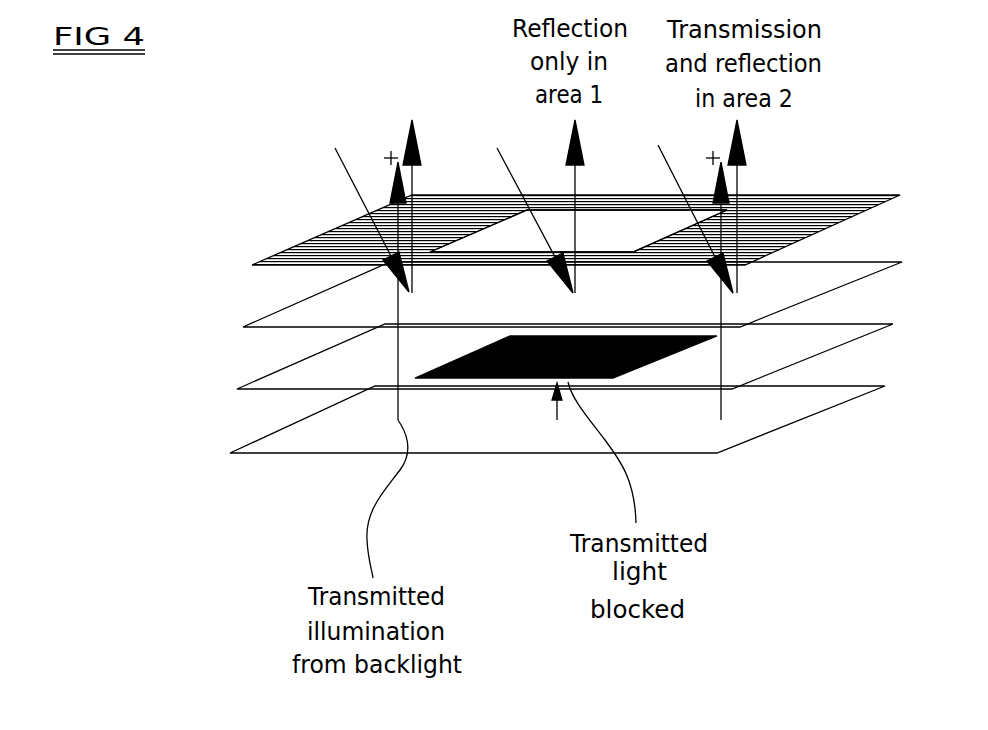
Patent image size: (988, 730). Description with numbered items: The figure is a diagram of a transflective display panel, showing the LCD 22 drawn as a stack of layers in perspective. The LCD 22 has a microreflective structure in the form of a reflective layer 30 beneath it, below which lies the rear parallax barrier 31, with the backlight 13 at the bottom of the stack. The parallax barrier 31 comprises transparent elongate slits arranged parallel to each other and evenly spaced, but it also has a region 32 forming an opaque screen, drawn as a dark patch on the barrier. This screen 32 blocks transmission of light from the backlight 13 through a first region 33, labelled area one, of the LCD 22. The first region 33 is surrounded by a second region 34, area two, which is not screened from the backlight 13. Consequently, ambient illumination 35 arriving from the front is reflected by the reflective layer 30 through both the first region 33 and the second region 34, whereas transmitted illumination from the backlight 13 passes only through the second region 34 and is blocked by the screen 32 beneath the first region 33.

The backlight 13 is at (357, 440).
The LCD 22 is at (327, 233).
The reflective layer 30 is at (288, 322).
The rear parallax barrier 31 is at (270, 380).
The region forming an opaque screen 32 is at (492, 378).
The first region 33 is at (482, 240).
The second region 34 is at (852, 198).
The ambient illumination 35 is at (491, 169).